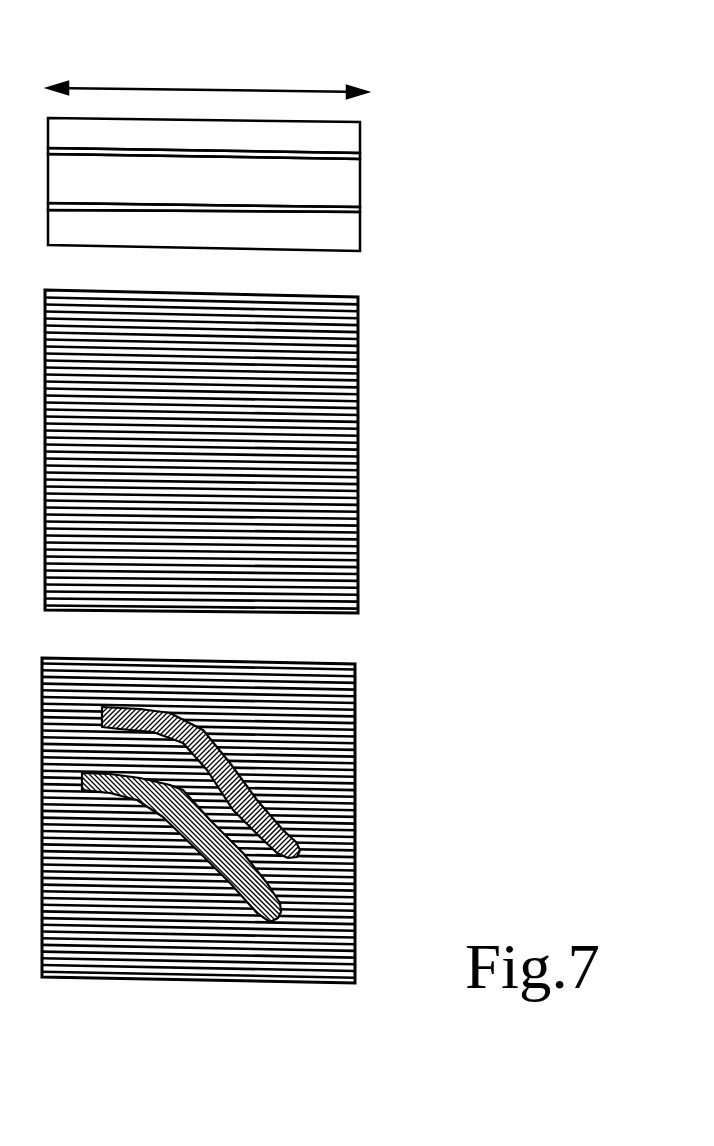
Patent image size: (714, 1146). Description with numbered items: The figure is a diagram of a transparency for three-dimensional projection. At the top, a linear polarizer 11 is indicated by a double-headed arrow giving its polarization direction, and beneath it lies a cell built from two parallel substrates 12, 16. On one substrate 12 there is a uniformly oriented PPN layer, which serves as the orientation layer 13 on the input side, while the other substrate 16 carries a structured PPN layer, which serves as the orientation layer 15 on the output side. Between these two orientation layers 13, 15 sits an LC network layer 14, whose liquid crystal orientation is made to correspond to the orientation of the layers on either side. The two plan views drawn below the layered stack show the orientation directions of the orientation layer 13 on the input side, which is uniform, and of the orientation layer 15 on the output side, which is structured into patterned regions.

The linear polarizer 11 is at (305, 87).
The substrate 12 is at (350, 143).
The orientation layer 13 is at (357, 158).
The LC network layer 14 is at (353, 187).
The orientation layer 15 is at (358, 217).
The substrate 16 is at (340, 241).